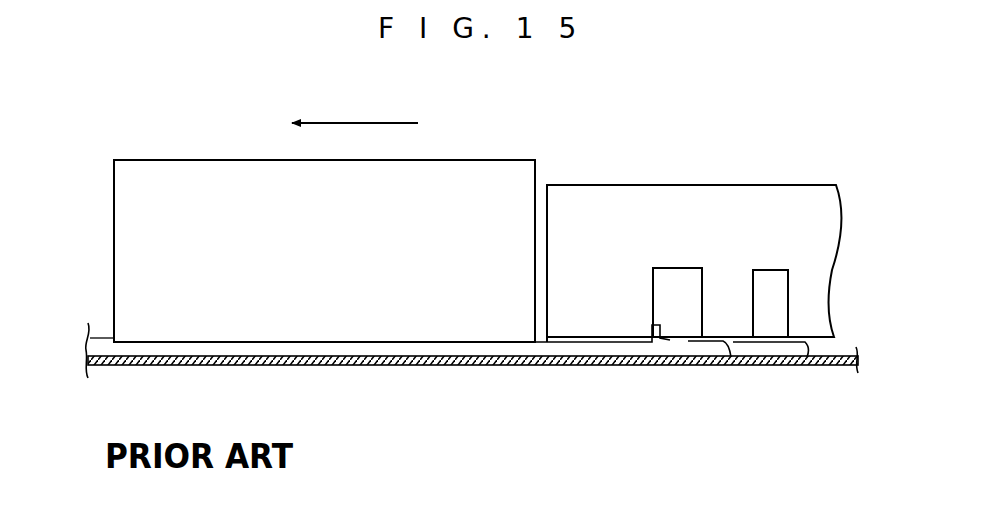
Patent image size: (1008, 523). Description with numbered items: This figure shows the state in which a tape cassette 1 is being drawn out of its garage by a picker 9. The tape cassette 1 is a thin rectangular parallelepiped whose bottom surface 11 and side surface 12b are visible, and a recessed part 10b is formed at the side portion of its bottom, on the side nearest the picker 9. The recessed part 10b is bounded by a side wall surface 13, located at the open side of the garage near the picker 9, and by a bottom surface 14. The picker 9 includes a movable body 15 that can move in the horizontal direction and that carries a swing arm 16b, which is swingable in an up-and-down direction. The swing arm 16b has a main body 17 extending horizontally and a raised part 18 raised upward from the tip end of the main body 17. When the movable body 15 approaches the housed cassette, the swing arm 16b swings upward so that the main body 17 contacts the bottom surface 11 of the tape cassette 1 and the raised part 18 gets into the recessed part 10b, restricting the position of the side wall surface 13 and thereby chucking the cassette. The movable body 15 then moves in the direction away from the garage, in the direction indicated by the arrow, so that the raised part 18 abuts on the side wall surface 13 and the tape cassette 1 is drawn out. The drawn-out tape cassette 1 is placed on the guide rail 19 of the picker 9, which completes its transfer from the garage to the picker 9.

The tape cassette 1 is at (711, 218).
The picker 9 is at (84, 306).
The recessed part 10b is at (680, 278).
The bottom surface 11 is at (805, 345).
The side surface 12b is at (758, 200).
The side wall surface 13 is at (658, 285).
The bottom surface 14 is at (688, 300).
The movable body 15 is at (198, 157).
The swing arm 16b is at (588, 348).
The main body 17 is at (626, 342).
The raised part 18 is at (666, 335).
The guide rail 19 is at (718, 345).